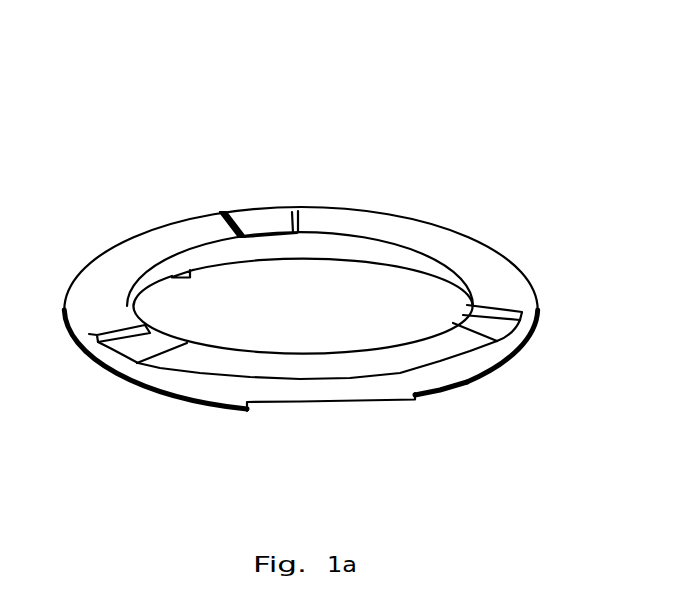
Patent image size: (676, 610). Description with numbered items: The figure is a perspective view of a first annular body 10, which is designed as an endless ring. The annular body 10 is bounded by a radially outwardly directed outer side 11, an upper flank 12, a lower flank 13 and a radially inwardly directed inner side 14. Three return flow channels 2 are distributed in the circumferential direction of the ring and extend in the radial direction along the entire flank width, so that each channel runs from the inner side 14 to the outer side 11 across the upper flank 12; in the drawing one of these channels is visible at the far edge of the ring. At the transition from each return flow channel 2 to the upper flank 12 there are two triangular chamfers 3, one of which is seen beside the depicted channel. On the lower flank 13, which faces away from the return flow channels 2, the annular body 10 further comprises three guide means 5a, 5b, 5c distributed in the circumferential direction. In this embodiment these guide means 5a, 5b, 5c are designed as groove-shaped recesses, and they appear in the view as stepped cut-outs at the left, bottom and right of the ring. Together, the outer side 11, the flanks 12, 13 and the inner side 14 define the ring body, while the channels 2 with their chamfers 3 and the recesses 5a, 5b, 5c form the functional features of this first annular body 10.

The first annular body 10 is at (185, 118).
The return flow channel 2 is at (255, 220).
The triangular chamfer 3 is at (298, 210).
The inner side 14 is at (170, 258).
The guide means 5a is at (414, 268).
The guide means 5b is at (328, 408).
The guide means 5c is at (138, 288).
The upper flank 12 is at (452, 248).
The outer side 11 is at (463, 370).
The lower flank 13 is at (222, 412).